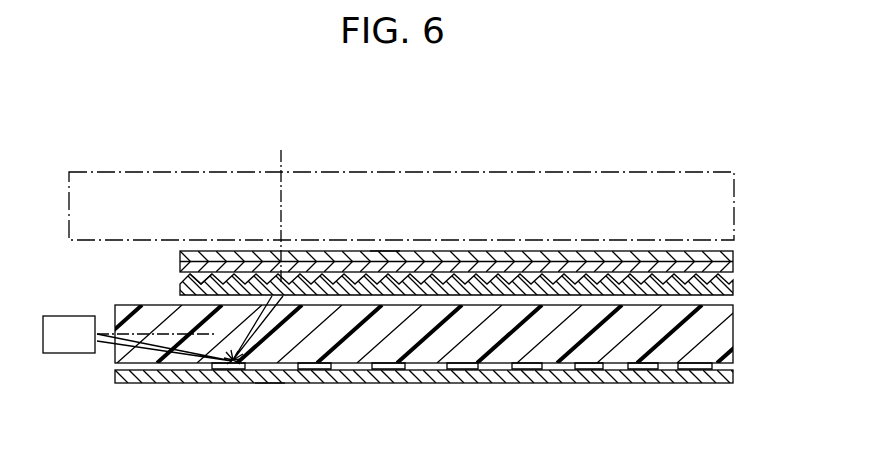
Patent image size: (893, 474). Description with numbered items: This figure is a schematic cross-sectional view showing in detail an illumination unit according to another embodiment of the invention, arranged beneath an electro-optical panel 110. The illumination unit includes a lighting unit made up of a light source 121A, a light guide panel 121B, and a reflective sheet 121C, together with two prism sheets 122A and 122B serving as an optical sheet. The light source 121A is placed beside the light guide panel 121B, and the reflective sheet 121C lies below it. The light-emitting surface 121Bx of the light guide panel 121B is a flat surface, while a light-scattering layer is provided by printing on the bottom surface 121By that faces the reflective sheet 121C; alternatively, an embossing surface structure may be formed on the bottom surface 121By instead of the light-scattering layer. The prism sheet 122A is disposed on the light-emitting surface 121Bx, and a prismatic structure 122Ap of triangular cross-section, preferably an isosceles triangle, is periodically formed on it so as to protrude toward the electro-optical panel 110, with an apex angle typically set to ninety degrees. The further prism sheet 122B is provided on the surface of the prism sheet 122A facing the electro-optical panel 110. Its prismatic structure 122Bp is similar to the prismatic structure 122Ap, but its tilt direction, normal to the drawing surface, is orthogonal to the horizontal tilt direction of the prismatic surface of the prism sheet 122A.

The electro-optical panel 110 is at (617, 172).
The prism sheet 122B is at (733, 262).
The prism sheet 122A is at (733, 288).
The light guide panel 121B is at (726, 328).
The reflective sheet 121C is at (727, 375).
The light source 121A is at (72, 348).
The light-emitting surface 121Bx is at (178, 302).
The bottom surface 121By is at (268, 372).
The prismatic structure 122Ap is at (208, 275).
The prismatic structure 122Bp is at (383, 251).